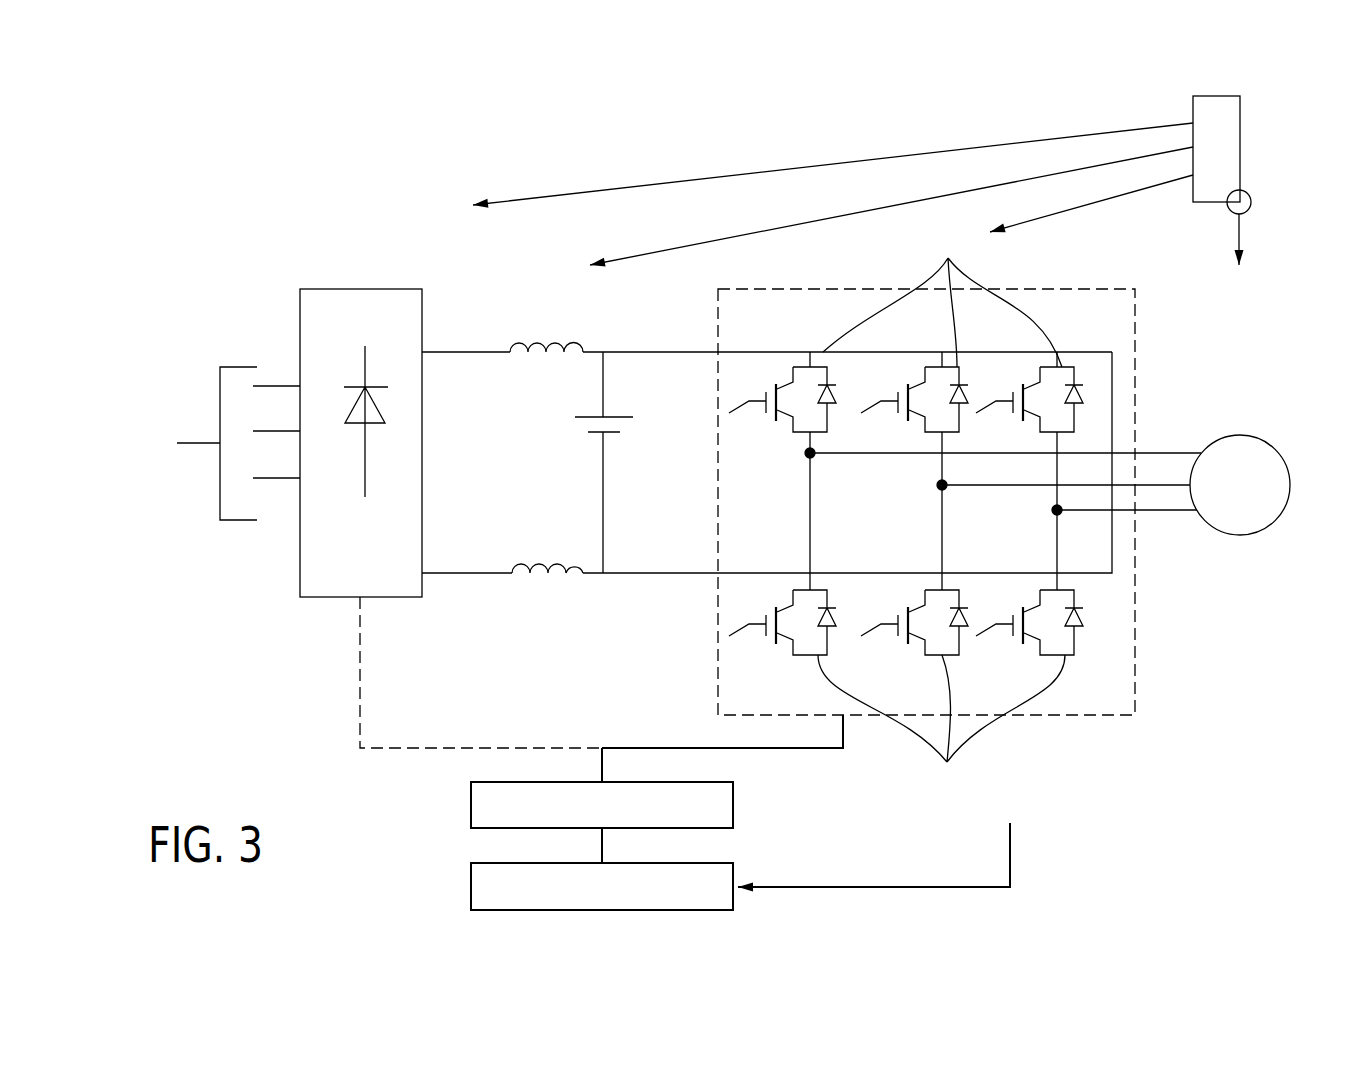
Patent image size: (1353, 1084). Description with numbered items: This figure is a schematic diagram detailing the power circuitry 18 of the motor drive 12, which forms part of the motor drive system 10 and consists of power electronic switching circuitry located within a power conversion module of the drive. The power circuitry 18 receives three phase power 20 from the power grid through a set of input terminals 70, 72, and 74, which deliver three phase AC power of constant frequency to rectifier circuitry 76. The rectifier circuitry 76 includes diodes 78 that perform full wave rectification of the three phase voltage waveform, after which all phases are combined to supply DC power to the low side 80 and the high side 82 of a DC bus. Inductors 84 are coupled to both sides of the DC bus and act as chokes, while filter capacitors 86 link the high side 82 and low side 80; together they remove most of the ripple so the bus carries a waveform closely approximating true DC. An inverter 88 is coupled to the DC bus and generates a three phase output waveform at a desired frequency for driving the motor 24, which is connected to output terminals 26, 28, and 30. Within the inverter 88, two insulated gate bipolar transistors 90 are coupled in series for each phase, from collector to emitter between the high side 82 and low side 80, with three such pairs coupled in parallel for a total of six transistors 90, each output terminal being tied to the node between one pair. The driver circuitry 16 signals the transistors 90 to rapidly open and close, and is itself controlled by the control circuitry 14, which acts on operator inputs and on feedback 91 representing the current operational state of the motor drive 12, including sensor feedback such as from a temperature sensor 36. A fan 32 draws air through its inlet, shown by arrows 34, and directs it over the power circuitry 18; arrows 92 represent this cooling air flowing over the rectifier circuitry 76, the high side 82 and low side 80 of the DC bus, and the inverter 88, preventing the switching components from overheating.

The motor drive system 10 is at (663, 107).
The motor drive 12 is at (1088, 790).
The control circuitry 14 is at (471, 888).
The driver circuitry 16 is at (471, 806).
The power circuitry 18 is at (633, 628).
The three phase power 20 is at (217, 382).
The motor 24 is at (1240, 435).
The output terminal 26 is at (1150, 453).
The output terminal 28 is at (1170, 485).
The output terminal 30 is at (1165, 510).
The fan 32 is at (1217, 96).
The arrows 34 is at (1250, 137).
The temperature sensor 36 is at (1250, 212).
The input terminal 70 is at (277, 383).
The input terminal 72 is at (277, 432).
The input terminal 74 is at (286, 480).
The rectifier circuitry 76 is at (360, 288).
The diodes 78 is at (368, 382).
The low side of DC bus 80 is at (458, 573).
The high side of DC bus 82 is at (506, 350).
The inductors 84 is at (578, 343).
The filter capacitors 86 is at (598, 432).
The inverter 88 is at (1075, 288).
The insulated gate bipolar transistors 90 is at (941, 511).
The feedback 91 is at (878, 889).
The arrows 92 is at (1097, 203).